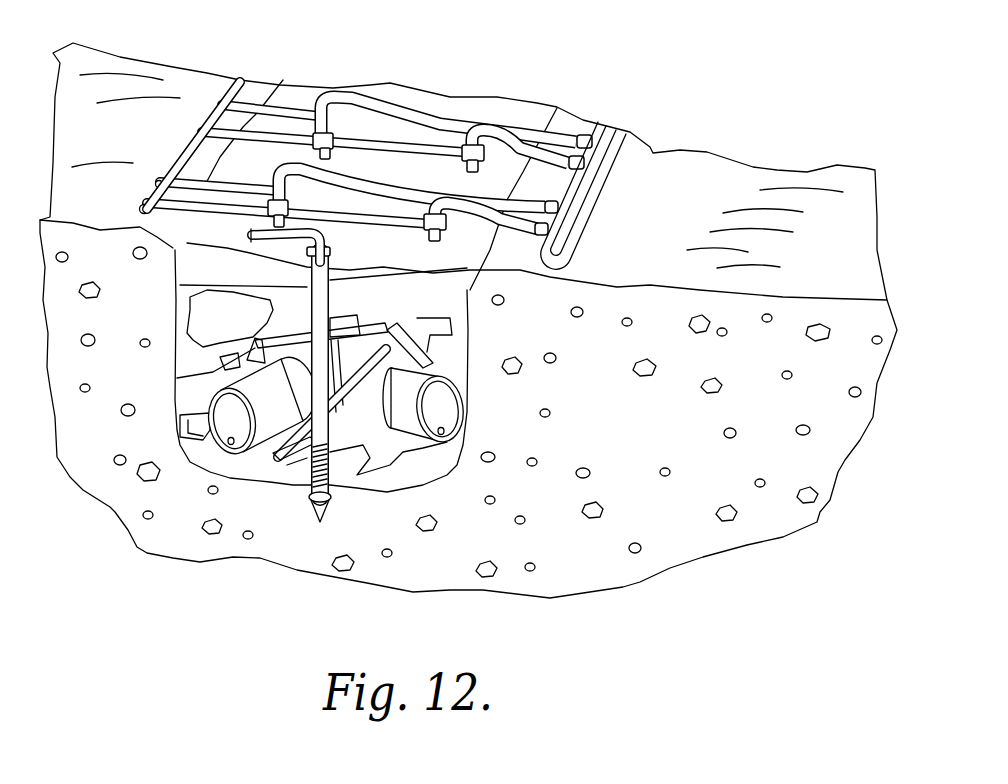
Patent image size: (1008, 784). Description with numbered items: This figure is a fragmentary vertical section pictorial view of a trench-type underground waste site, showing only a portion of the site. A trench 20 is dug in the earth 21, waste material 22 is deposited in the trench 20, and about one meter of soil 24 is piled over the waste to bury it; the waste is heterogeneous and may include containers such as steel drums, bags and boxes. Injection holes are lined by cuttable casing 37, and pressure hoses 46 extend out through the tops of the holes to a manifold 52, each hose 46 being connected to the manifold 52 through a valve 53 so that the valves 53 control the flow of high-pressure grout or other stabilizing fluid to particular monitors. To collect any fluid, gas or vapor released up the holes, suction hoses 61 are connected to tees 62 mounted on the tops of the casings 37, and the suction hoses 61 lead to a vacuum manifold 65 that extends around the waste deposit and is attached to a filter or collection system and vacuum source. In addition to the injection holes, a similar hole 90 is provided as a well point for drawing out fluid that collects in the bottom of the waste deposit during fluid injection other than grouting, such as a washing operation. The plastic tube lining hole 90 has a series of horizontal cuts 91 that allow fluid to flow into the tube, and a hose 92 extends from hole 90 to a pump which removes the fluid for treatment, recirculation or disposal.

The trench 20 is at (375, 484).
The earth 21 is at (640, 434).
The waste material 22 is at (400, 453).
The soil 24 is at (190, 270).
The casing 37 is at (317, 156).
The hoses 46 is at (397, 187).
The manifold 52 is at (563, 220).
The valves 53 is at (584, 159).
The suction hoses 61 is at (163, 203).
The tees 62 is at (272, 212).
The vacuum manifold 65 is at (232, 90).
The hole 90 is at (330, 285).
The horizontal cuts 91 is at (307, 467).
The hose 92 is at (273, 243).